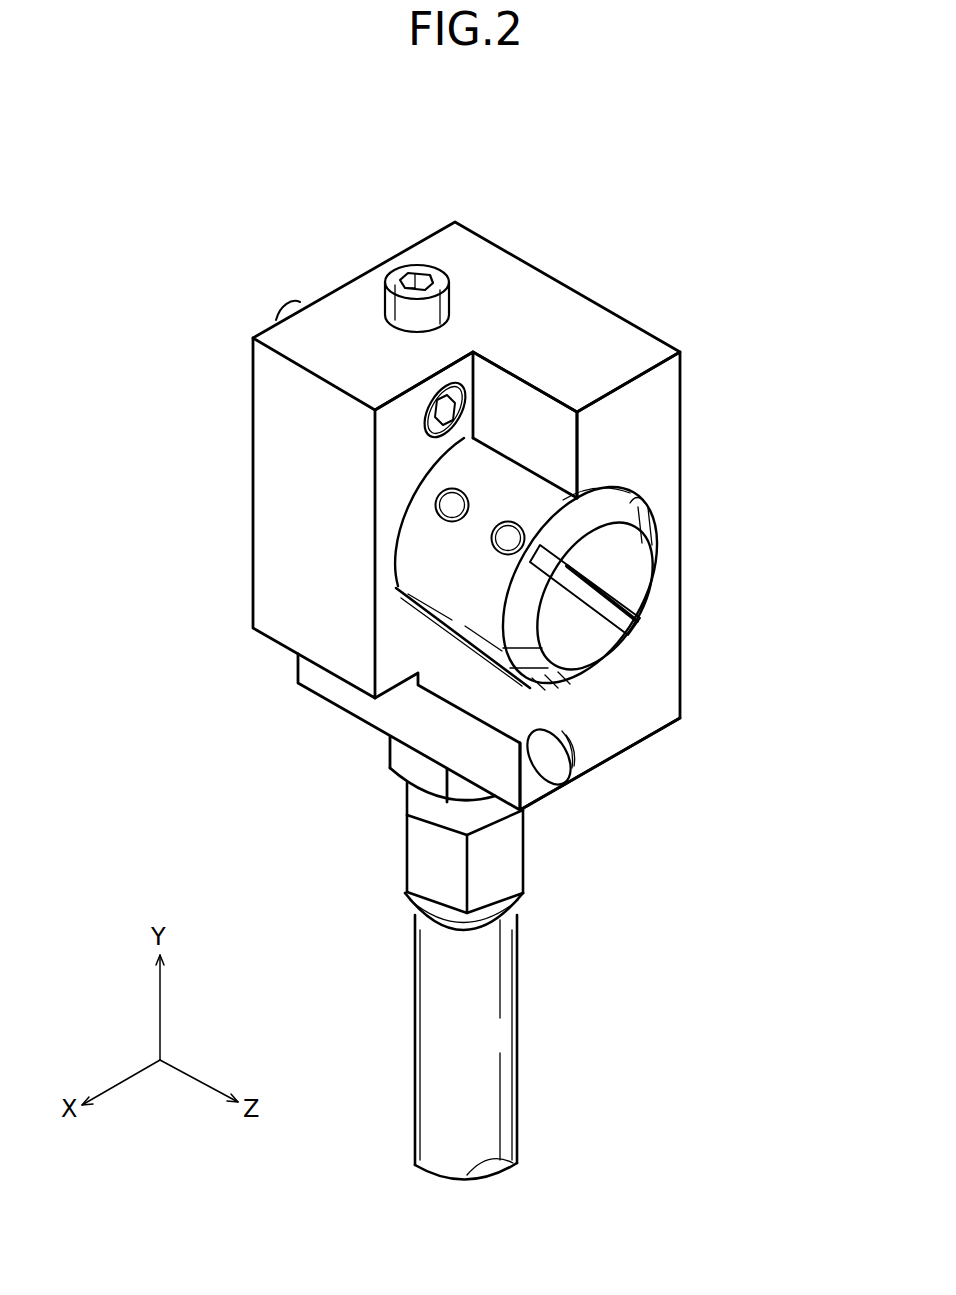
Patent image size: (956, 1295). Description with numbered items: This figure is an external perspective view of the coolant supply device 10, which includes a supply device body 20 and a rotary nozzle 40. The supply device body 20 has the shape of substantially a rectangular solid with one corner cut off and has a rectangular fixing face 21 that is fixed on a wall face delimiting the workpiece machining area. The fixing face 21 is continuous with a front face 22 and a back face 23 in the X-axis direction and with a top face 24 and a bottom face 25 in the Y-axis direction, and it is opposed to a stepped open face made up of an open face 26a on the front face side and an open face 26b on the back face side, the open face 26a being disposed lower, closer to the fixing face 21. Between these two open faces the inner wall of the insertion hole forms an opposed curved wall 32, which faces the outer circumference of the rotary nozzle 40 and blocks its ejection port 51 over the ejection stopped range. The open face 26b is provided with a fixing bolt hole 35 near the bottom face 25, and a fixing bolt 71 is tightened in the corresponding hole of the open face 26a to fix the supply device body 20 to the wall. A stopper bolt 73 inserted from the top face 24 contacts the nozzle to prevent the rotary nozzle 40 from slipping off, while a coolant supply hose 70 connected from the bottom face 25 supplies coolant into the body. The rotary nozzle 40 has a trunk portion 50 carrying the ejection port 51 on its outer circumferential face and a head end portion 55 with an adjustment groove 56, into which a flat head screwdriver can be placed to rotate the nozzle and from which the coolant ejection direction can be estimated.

The coolant supply device 10 is at (178, 262).
The supply device body 20 is at (547, 271).
The fixing face 21 is at (288, 428).
The front face 22 is at (285, 462).
The back face 23 is at (637, 352).
The top face 24 is at (495, 268).
The bottom face 25 is at (630, 713).
The open face on front face side 26a is at (398, 412).
The open face on back face side 26b is at (648, 412).
The opposed curved wall 32 is at (652, 510).
The fixing bolt hole 35 is at (548, 758).
The rotary nozzle 40 is at (468, 660).
The trunk portion 50 is at (410, 593).
The ejection port 51 is at (506, 540).
The head end portion 55 is at (643, 568).
The adjustment groove 56 is at (632, 632).
The coolant supply hose 70 is at (490, 1088).
The fixing bolt 71 is at (458, 398).
The stopper bolt 73 is at (418, 265).